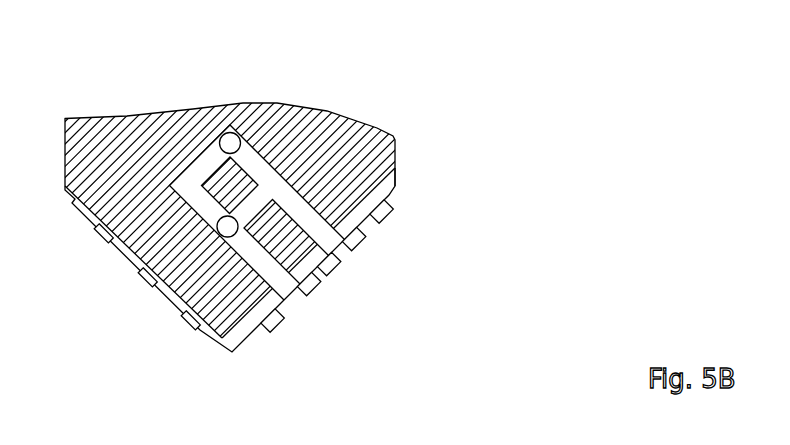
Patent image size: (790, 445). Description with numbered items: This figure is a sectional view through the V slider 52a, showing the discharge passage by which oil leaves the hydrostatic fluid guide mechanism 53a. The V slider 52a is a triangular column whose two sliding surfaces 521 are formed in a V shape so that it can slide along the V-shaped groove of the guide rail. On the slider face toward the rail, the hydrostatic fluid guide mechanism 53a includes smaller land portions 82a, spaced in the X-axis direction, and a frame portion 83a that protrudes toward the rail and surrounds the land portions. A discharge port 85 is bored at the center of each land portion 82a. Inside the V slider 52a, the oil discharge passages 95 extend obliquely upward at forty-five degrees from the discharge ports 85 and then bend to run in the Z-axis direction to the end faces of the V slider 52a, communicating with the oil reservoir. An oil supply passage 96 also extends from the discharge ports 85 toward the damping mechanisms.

The V slider 52a is at (332, 120).
The oil supply passage 96 is at (228, 226).
The oil discharge passages 95 is at (312, 174).
The sliding surfaces 521 is at (388, 195).
The frame portion 83a is at (380, 217).
The land portions 82a is at (350, 237).
The discharge ports 85 is at (348, 247).
The hydrostatic fluid guide mechanism 53a is at (102, 295).